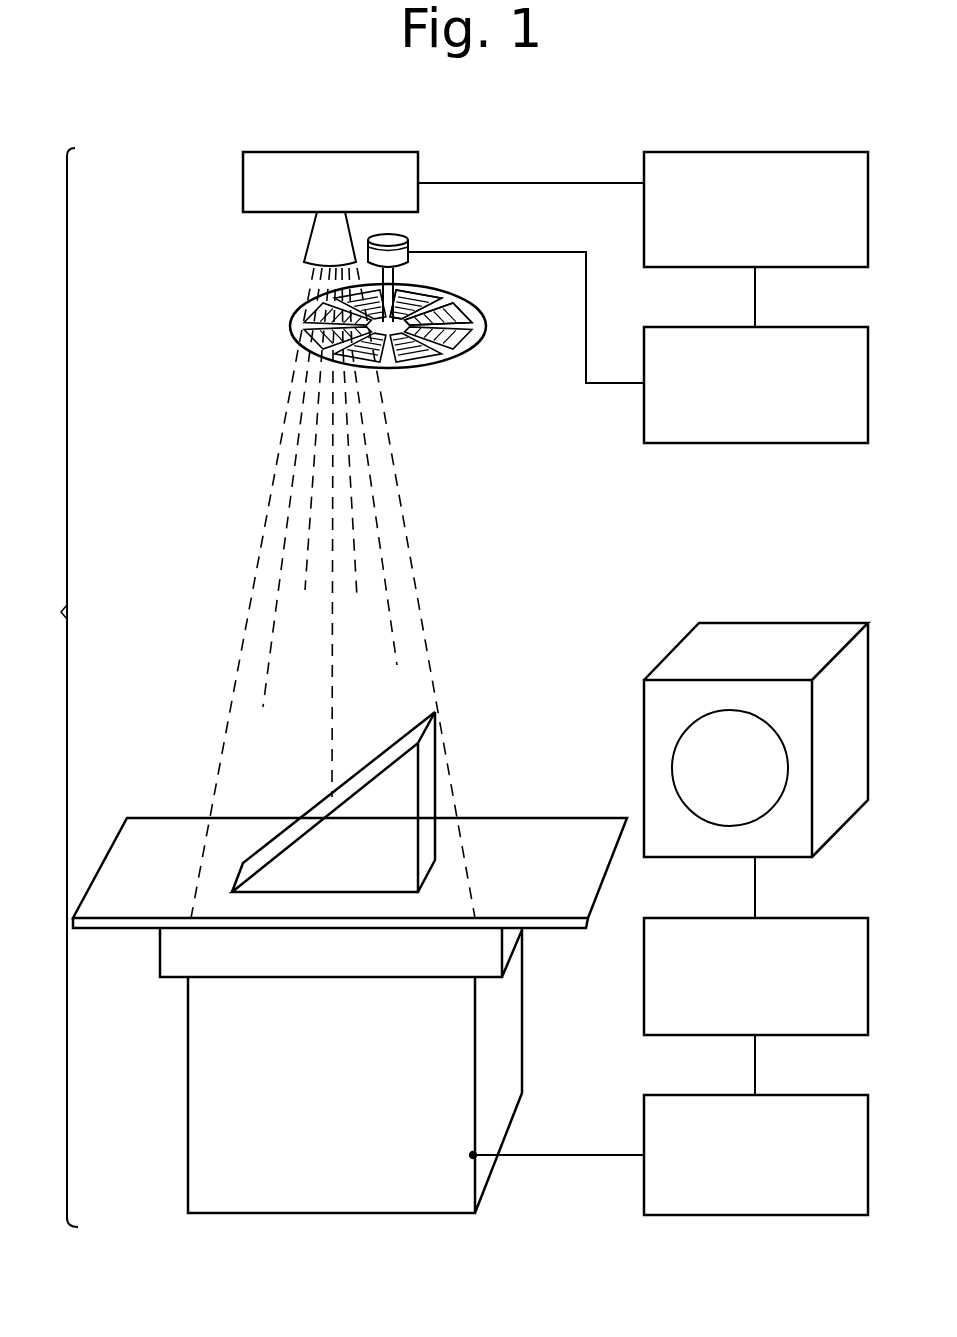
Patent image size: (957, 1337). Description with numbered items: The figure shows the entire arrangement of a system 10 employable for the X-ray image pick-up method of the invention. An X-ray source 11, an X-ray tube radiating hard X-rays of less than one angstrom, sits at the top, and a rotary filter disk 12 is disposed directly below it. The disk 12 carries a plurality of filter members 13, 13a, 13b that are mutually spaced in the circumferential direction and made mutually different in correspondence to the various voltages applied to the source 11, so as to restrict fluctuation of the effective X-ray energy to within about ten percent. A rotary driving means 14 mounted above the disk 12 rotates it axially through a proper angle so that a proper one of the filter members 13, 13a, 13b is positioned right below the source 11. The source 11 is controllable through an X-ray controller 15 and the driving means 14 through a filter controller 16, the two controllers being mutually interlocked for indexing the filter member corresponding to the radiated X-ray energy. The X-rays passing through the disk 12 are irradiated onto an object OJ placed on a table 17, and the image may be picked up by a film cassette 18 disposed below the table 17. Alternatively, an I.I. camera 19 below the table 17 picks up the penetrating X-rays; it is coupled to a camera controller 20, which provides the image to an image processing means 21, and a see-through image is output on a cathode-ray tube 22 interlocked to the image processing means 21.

The system 10 is at (50, 687).
The X-ray source 11 is at (342, 152).
The rotary filter disk 12 is at (470, 340).
The filter member 13 is at (442, 345).
The filter member 13a is at (470, 313).
The filter member 13b is at (413, 293).
The rotary driving means 14 is at (405, 242).
The X-ray controller 15 is at (775, 152).
The filter controller 16 is at (790, 327).
The table 17 is at (175, 823).
The film cassette 18 is at (168, 953).
The I.I. camera 19 is at (197, 1122).
The camera controller 20 is at (644, 1122).
The image processing means 21 is at (644, 975).
The cathode-ray tube 22 is at (767, 623).
The object OJ is at (432, 787).